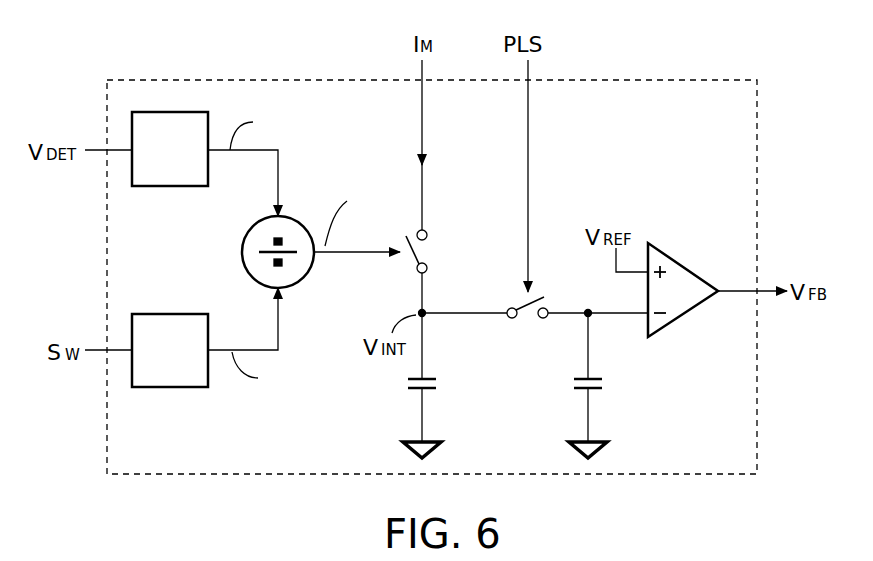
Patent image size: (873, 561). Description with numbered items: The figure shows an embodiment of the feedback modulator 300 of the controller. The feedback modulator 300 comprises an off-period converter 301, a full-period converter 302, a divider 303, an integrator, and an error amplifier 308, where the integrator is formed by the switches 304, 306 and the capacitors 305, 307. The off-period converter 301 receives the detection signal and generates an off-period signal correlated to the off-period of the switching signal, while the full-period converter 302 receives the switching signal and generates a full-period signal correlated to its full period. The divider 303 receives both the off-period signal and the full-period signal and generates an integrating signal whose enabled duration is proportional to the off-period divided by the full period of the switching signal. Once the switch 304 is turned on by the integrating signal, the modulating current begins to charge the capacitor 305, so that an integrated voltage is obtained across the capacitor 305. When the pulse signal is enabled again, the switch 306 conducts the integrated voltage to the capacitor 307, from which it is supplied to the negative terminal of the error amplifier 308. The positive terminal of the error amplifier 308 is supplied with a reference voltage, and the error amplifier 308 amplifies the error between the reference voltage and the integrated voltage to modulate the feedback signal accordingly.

The feedback modulator 300 is at (690, 80).
The off-period converter 301 is at (222, 164).
The full-period converter 302 is at (211, 339).
The divider 303 is at (308, 281).
The switch 304 is at (435, 258).
The capacitor 305 is at (438, 383).
The switch 306 is at (527, 322).
The capacitor 307 is at (604, 383).
The error amplifier 308 is at (682, 262).